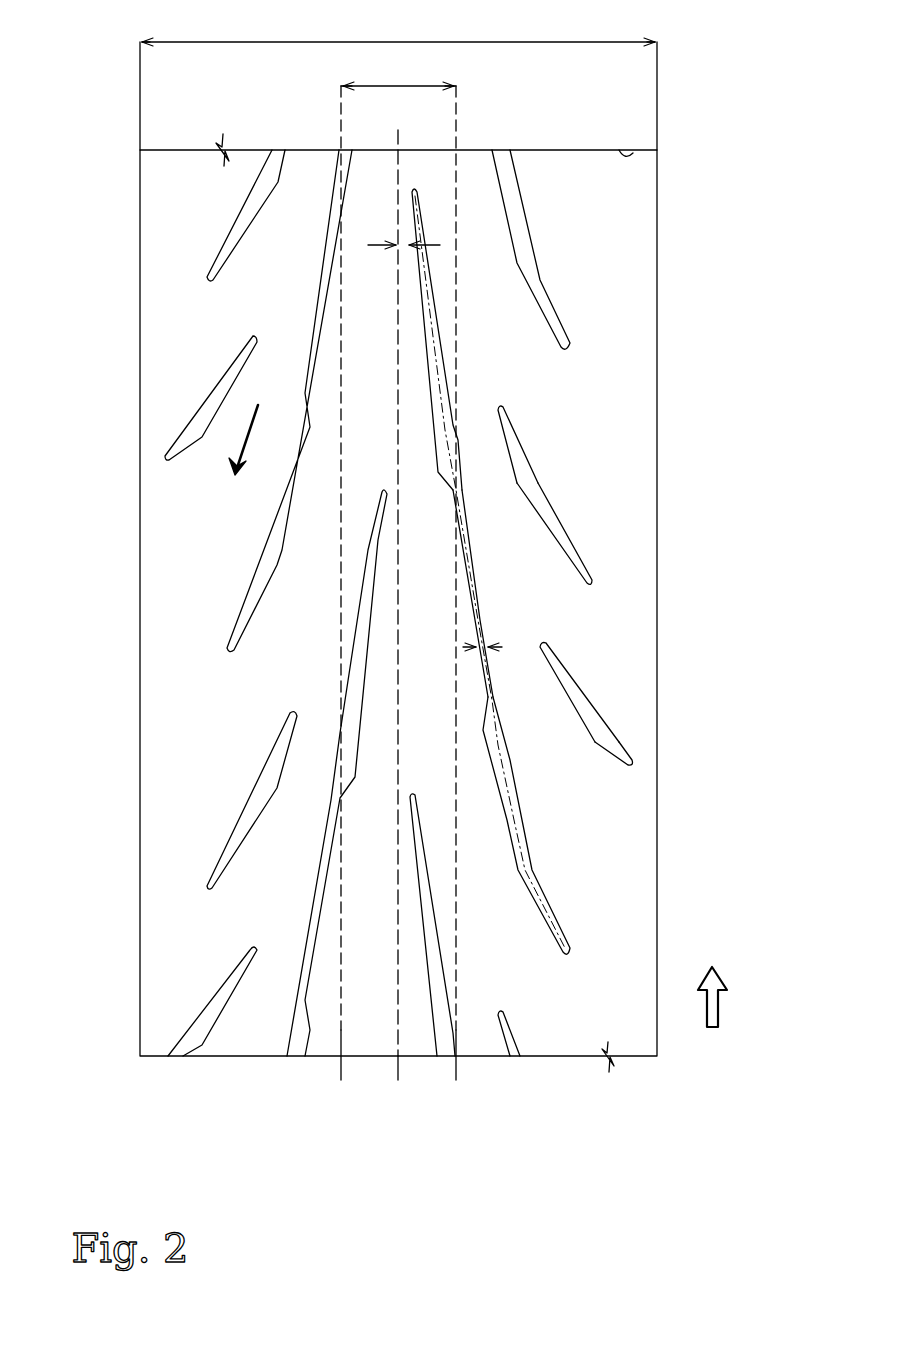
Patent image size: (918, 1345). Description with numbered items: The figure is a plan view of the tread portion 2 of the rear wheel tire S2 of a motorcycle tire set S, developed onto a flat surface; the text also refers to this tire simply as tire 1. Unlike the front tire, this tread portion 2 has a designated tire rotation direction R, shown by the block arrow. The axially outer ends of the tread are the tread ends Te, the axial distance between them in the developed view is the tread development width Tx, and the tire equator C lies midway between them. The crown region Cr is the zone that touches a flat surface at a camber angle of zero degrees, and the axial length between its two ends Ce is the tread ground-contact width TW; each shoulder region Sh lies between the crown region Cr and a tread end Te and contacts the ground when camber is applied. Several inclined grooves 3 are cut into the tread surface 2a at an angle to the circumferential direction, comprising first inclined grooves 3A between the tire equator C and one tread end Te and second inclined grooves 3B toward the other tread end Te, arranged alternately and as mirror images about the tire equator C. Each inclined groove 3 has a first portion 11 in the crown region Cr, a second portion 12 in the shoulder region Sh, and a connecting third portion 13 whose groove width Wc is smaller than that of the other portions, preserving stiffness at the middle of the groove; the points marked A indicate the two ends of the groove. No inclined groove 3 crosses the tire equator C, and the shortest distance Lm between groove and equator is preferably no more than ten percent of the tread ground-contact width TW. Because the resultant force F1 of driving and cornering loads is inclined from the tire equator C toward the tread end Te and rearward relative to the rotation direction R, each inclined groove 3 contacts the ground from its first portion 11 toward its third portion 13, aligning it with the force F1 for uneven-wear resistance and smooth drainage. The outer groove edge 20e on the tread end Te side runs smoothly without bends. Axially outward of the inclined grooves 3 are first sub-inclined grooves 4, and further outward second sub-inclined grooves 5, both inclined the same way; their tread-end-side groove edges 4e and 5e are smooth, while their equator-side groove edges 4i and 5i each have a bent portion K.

The tire 1 is at (124, 1069).
The tread portion 2 is at (693, 212).
The tread surface 2a is at (186, 958).
The inclined groove 3 is at (562, 571).
The first inclined groove 3A is at (575, 319).
The second inclined groove 3B is at (325, 636).
The first sub-inclined groove 4 is at (606, 494).
The groove edge on tread end side of first sub-inclined groove 4e is at (517, 433).
The groove edge on tire equator side of first sub-inclined groove 4i is at (535, 515).
The second sub-inclined groove 5 is at (627, 706).
The groove edge on tire equator side of second sub-inclined groove 5i is at (562, 690).
The groove edge on tread end side of second sub-inclined groove 5e is at (617, 743).
The first portion 11 is at (443, 368).
The second portion 12 is at (520, 840).
The third portion 13 is at (471, 569).
The outer groove edge 20e is at (323, 891).
The bent portion K is at (199, 447).
The resultant force F1 is at (238, 453).
The tread end Te is at (140, 178).
The tire set S is at (721, 88).
The rear wheel tire S2 is at (663, 126).
The tread development width Tx is at (398, 82).
The tread ground-contact width TW is at (398, 569).
The tire equator C is at (398, 593).
The shortest distance Lm is at (405, 242).
The groove end point A is at (413, 188).
The groove width Wc is at (485, 641).
The shoulder region Sh is at (227, 1068).
The end of crown region Ce is at (340, 1033).
The crown region Cr is at (412, 1068).
The tire rotation direction R is at (712, 985).